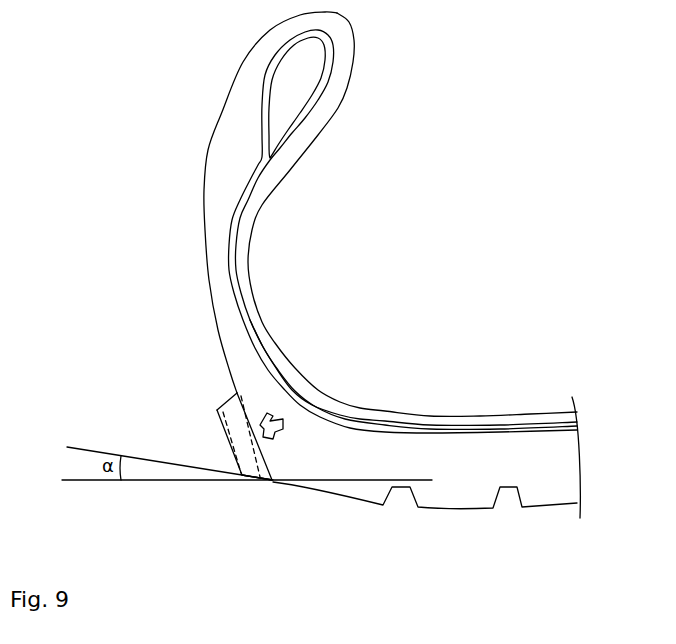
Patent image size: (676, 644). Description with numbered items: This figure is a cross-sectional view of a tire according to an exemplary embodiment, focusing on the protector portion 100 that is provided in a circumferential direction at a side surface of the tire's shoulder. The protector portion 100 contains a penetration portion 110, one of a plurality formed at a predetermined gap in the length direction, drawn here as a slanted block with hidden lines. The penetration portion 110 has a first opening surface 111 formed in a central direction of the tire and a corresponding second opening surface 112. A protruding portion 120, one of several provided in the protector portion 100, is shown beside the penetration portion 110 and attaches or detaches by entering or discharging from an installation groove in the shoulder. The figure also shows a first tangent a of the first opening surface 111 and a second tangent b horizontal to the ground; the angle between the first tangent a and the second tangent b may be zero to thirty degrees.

The protector portion 100 is at (220, 387).
The penetration portion 110 is at (243, 403).
The first opening surface 111 is at (260, 473).
The second opening surface 112 is at (236, 396).
The protruding portion 120 is at (277, 417).
The first tangent a is at (162, 454).
The second tangent b is at (239, 478).